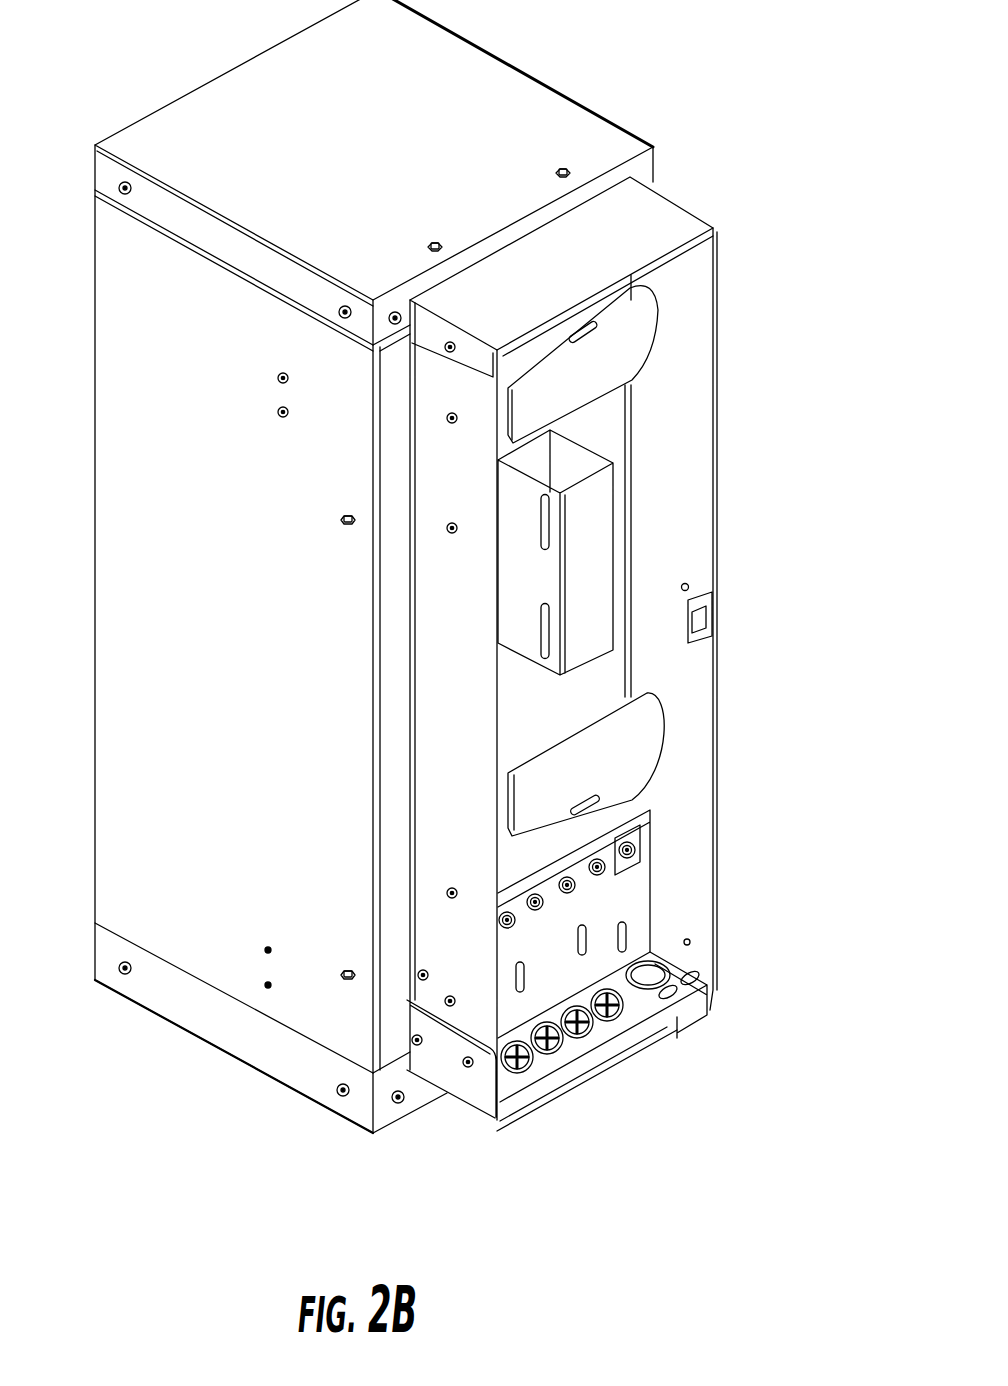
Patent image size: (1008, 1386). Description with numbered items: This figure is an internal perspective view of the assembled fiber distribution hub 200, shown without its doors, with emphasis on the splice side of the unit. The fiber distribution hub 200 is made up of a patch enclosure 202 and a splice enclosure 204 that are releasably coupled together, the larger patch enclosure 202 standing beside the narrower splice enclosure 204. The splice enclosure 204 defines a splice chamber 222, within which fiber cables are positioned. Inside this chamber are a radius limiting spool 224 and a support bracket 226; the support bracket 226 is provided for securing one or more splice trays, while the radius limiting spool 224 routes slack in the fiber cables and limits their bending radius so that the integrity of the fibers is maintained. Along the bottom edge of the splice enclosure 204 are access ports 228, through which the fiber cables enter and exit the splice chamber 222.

The fiber distribution hub 200 is at (762, 288).
The patch enclosure 202 is at (467, 88).
The splice enclosure 204 is at (651, 225).
The splice chamber 222 is at (692, 513).
The radius limiting spool 224 is at (638, 733).
The support bracket 226 is at (590, 547).
The access ports 228 is at (648, 990).